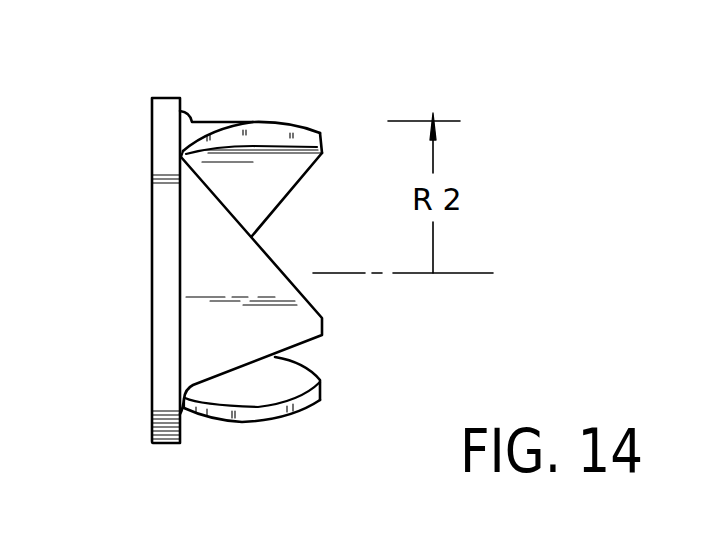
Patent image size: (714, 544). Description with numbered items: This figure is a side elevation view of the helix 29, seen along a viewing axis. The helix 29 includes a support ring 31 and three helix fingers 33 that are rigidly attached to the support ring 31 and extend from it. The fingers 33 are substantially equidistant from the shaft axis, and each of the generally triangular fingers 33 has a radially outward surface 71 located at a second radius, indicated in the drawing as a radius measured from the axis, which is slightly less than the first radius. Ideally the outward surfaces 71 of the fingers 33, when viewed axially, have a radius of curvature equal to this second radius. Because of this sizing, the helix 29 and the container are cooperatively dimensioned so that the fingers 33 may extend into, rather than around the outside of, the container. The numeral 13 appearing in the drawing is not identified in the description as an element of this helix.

The helix 29 is at (139, 77).
The support ring 31 is at (165, 304).
The radially outward surface 71 is at (252, 118).
The helix fingers 33 is at (290, 124).
The axis of rotation 13 is at (463, 275).